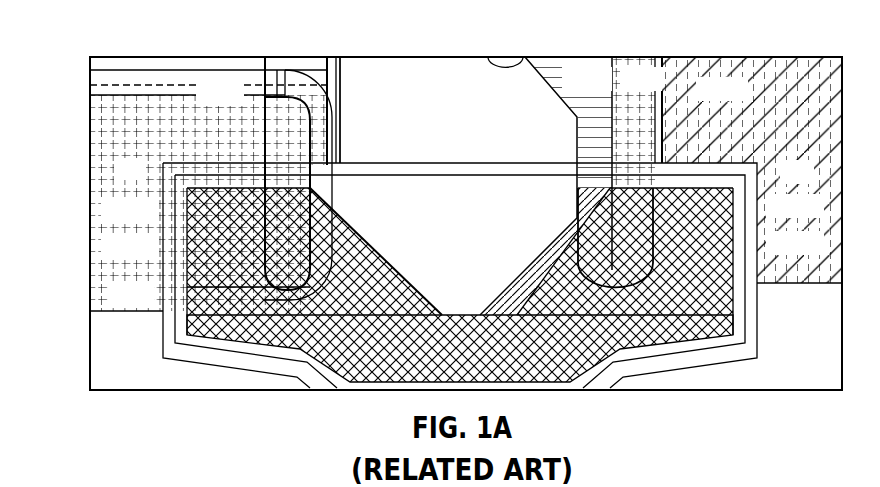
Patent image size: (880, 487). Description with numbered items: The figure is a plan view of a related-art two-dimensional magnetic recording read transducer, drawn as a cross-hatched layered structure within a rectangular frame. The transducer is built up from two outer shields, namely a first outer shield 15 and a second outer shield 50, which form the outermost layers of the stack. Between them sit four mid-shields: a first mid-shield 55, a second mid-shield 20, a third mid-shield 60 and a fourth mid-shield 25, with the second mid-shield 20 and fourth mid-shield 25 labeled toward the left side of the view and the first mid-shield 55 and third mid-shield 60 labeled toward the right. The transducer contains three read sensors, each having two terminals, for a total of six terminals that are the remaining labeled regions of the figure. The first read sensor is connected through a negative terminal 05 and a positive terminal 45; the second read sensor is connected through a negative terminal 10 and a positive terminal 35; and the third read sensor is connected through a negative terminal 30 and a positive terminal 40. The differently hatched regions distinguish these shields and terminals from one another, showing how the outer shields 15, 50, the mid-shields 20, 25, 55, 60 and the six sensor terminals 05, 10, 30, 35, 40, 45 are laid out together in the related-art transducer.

The negative terminal (R1−) 05 is at (380, 62).
The negative terminal (R2−) 10 is at (265, 62).
The first outer shield (S1) 15 is at (197, 363).
The second mid-shield (MS2) 20 is at (193, 298).
The fourth mid-shield (MS4) 25 is at (365, 240).
The negative terminal (R3−) 30 is at (100, 293).
The positive terminal (R2+) 35 is at (573, 63).
The positive terminal (R3+) 40 is at (640, 63).
The positive terminal (R1+) 45 is at (733, 58).
The second outer shield (S2) 50 is at (748, 327).
The first mid-shield (MS1) 55 is at (757, 312).
The third mid-shield (MS3) 60 is at (533, 260).